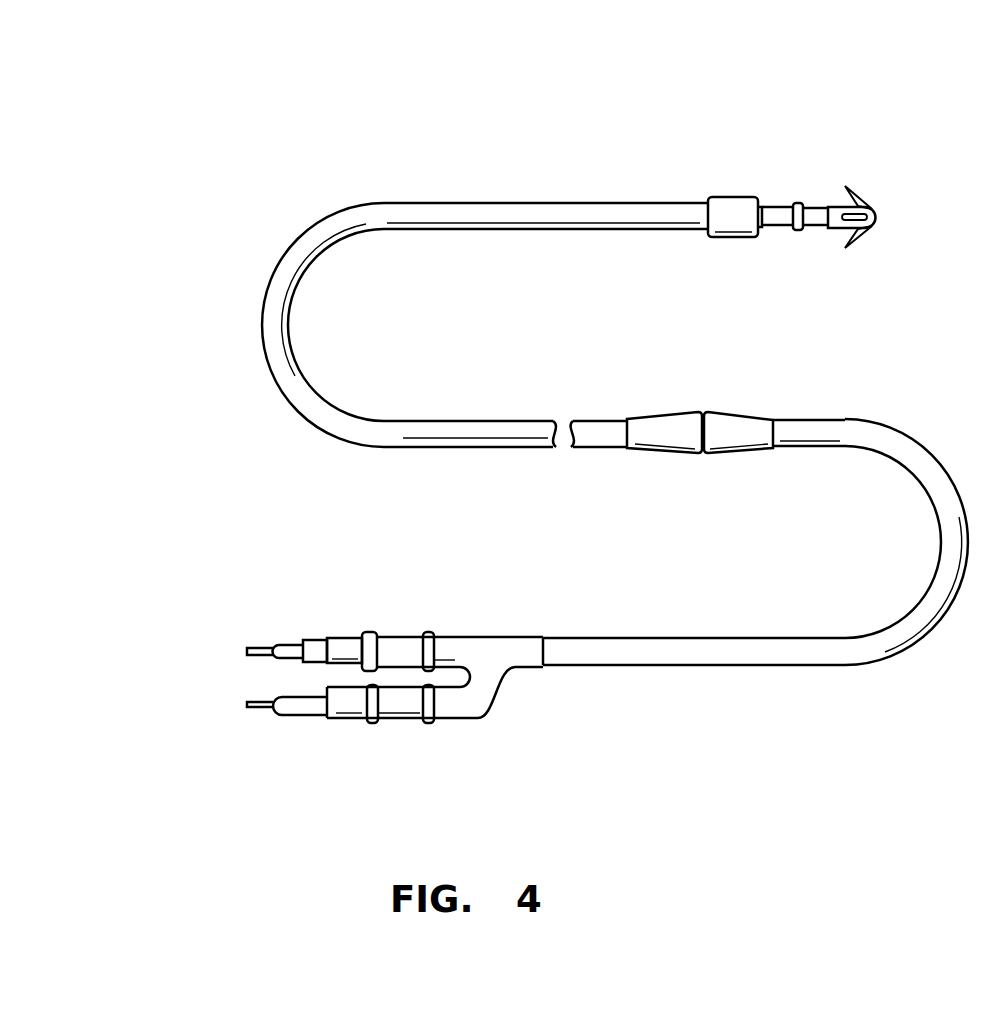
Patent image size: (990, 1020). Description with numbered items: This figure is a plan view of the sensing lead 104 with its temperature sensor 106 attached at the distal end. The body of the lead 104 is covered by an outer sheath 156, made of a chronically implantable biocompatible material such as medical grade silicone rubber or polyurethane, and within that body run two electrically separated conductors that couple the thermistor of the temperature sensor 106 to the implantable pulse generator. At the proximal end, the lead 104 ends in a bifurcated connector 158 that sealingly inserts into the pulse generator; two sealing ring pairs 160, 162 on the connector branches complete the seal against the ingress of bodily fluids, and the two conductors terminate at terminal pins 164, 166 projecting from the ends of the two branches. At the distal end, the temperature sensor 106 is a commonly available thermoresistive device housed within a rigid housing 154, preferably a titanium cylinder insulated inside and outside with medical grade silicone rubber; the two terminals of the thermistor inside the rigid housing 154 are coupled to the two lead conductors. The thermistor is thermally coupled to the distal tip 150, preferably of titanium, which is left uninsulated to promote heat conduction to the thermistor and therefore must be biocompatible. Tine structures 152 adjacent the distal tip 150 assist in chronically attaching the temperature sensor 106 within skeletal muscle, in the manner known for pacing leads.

The lead 104 is at (190, 405).
The temperature sensor 106 is at (770, 168).
The distal tip 150 is at (873, 215).
The tine structures 152 is at (852, 189).
The rigid housing 154 is at (780, 227).
The outer sheath 156 is at (310, 393).
The bifurcated connector 158 is at (470, 648).
The sealing ring pair 160 is at (427, 633).
The sealing ring pair 162 is at (427, 722).
The terminal pin 164 is at (262, 648).
The terminal pin 166 is at (262, 710).